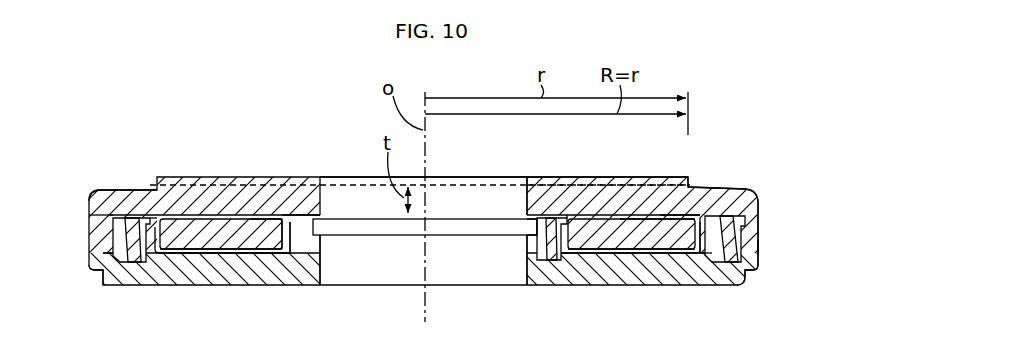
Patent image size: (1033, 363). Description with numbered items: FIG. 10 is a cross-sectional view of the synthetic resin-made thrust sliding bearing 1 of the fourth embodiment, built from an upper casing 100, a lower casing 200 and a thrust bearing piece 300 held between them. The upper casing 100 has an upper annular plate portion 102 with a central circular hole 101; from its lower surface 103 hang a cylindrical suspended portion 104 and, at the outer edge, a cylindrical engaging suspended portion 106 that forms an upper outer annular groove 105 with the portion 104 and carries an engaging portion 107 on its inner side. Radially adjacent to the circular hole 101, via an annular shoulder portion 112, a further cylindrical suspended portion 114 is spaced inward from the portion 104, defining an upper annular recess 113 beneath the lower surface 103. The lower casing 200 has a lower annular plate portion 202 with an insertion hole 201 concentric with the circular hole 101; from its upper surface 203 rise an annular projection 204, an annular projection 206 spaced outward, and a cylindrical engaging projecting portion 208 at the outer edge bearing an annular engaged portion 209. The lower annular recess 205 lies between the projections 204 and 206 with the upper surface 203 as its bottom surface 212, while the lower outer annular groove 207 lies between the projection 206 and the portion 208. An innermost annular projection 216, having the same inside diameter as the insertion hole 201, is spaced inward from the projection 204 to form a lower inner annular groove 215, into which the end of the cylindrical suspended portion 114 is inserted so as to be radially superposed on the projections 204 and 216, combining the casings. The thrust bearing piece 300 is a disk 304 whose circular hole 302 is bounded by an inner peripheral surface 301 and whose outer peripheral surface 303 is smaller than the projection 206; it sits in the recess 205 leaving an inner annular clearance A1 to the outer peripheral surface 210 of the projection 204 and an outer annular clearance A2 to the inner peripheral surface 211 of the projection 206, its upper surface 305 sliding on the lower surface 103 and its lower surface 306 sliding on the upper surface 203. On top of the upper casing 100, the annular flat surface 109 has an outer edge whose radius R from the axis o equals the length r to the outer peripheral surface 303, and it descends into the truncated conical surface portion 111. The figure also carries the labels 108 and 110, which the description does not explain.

The synthetic resin-made thrust sliding bearing 1 is at (128, 140).
The upper casing 100 is at (544, 212).
The circular hole 101 is at (448, 196).
The upper annular plate portion 102 is at (602, 196).
The lower surface 103 is at (650, 223).
The cylindrical suspended portion 104 is at (713, 223).
The upper outer annular groove 105 is at (750, 230).
The cylindrical engaging suspended portion 106 is at (758, 236).
The engaging portion 107 is at (743, 262).
The reference line 108 is at (630, 222).
The annular flat surface 109 is at (586, 205).
The side recess 110 is at (752, 246).
The truncated conical surface portion 111 is at (727, 220).
The annular shoulder portion 112 is at (532, 226).
The upper annular recess 113 is at (566, 222).
The cylindrical suspended portion 114 is at (525, 252).
The lower casing 200 is at (243, 270).
The insertion hole 201 is at (398, 262).
The lower annular plate portion 202 is at (273, 266).
The upper surface 203 is at (215, 247).
The annular projection 204 is at (300, 213).
The lower annular recess 205 is at (158, 247).
The annular projection 206 is at (135, 225).
The lower outer annular groove 207 is at (131, 264).
The cylindrical engaging projecting portion 208 is at (110, 262).
The annular engaged portion 209 is at (110, 259).
The outer peripheral surface 210 is at (266, 222).
The inner peripheral surface 211 is at (173, 223).
The bottom surface 212 is at (186, 254).
The lower inner annular groove 215 is at (302, 270).
The annular projection 216 is at (318, 247).
The thrust bearing piece 300 is at (637, 246).
The inner peripheral surface 301 is at (548, 262).
The circular hole 302 is at (448, 237).
The outer peripheral surface 303 is at (700, 257).
The disk 304 is at (663, 242).
The upper surface 305 is at (668, 222).
The lower surface 306 is at (600, 257).
The inner annular clearance A1 is at (560, 263).
The outer annular clearance A2 is at (700, 264).